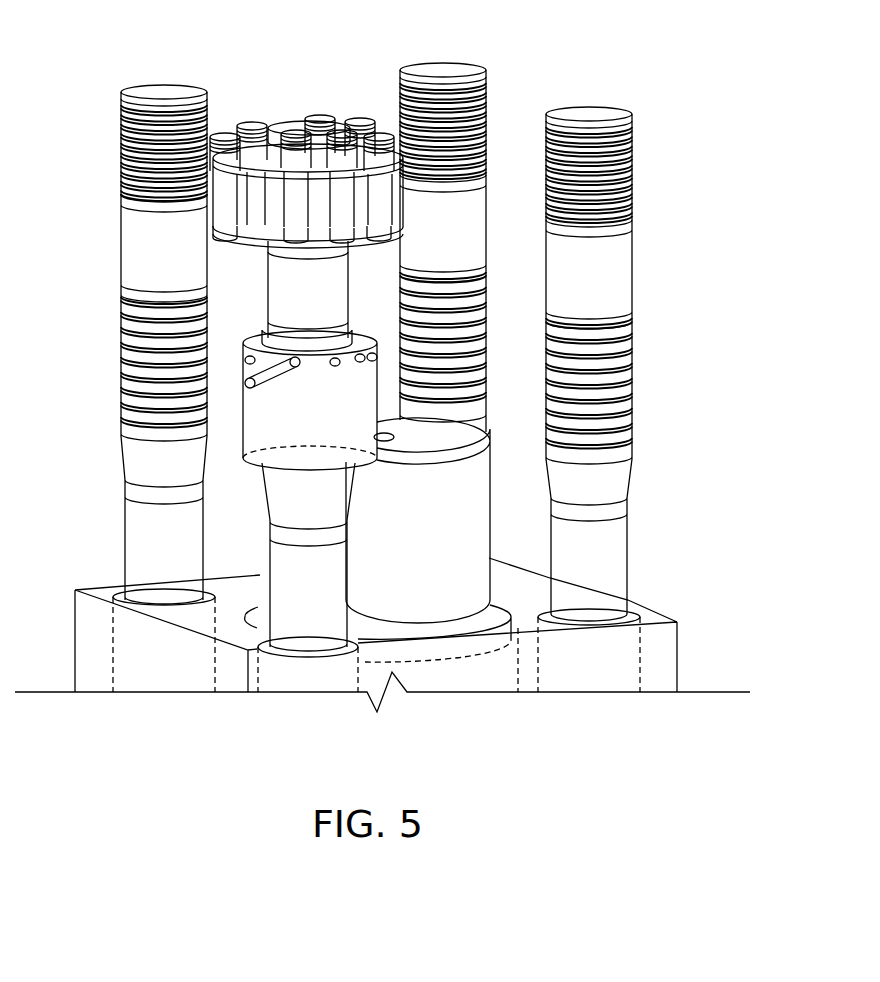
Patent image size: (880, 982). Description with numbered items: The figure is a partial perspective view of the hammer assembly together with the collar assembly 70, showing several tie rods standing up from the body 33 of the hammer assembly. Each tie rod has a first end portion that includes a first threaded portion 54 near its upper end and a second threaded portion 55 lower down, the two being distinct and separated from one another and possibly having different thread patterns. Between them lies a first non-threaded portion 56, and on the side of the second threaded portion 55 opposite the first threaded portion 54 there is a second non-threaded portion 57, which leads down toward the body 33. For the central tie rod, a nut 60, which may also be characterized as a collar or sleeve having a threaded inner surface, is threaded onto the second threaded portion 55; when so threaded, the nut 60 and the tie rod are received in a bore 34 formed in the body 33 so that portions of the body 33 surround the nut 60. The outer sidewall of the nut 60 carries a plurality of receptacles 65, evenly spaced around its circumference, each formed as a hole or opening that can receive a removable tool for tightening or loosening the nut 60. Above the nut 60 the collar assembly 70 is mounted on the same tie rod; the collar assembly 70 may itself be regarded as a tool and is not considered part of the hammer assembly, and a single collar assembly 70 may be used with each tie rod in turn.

The body 33 is at (678, 655).
The bore 34 is at (247, 650).
The first threaded portion 54 is at (400, 88).
The second threaded portion 55 is at (118, 355).
The first non-threaded portion 56 is at (484, 200).
The second non-threaded portion 57 is at (130, 515).
The nut 60 is at (317, 423).
The receptacle 65 is at (343, 370).
The collar assembly 70 is at (310, 101).